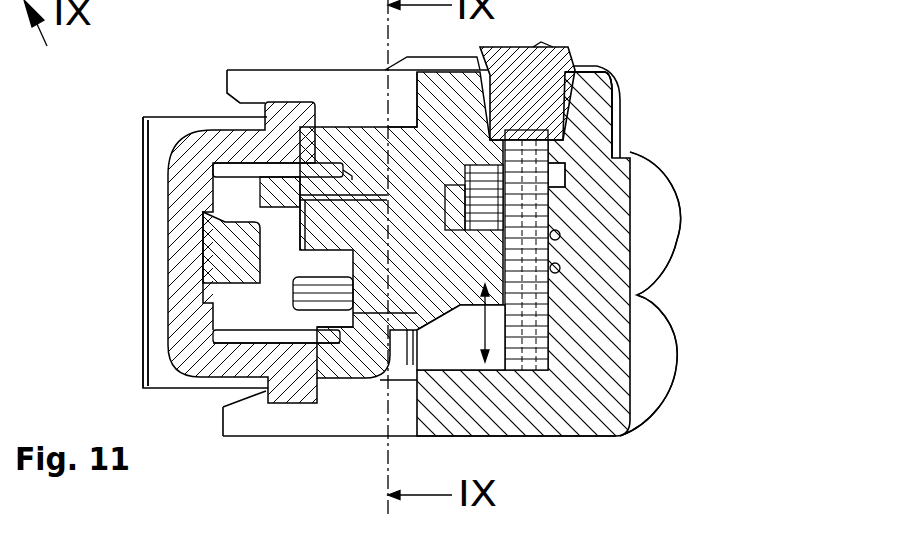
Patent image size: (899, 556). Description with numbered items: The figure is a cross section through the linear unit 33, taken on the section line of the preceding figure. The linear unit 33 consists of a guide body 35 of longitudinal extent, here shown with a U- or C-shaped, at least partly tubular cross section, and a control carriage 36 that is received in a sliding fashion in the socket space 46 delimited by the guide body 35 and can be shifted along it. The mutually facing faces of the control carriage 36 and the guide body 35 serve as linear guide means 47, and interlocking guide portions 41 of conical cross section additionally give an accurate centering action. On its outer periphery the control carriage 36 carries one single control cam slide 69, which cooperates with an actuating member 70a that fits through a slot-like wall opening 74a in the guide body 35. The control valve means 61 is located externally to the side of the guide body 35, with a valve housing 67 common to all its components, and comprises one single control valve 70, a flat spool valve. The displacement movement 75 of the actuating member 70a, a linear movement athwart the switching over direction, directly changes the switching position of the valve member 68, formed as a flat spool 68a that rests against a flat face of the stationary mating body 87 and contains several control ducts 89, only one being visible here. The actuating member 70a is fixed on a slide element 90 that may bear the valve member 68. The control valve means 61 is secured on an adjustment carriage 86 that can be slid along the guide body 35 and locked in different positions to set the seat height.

The linear unit 33 is at (684, 198).
The guide body 35 is at (328, 367).
The control carriage 36 is at (282, 205).
The interlocking guide portions 41 is at (260, 247).
The socket space 46 is at (228, 341).
The linear guide means 47 is at (336, 172).
The control valve means 61 is at (576, 189).
The valve housing 67 is at (607, 386).
The valve member 68 is at (560, 165).
The flat spool 68a is at (588, 115).
The control cam slide 69 is at (297, 165).
The control valve 70 is at (556, 175).
The actuating member 70a is at (203, 255).
The wall opening 74a is at (370, 172).
The displacement movement 75 is at (477, 323).
The adjustment carriage 86 is at (605, 271).
The mating body 87 is at (540, 325).
The control ducts 89 is at (535, 222).
The slide element 90 is at (447, 150).